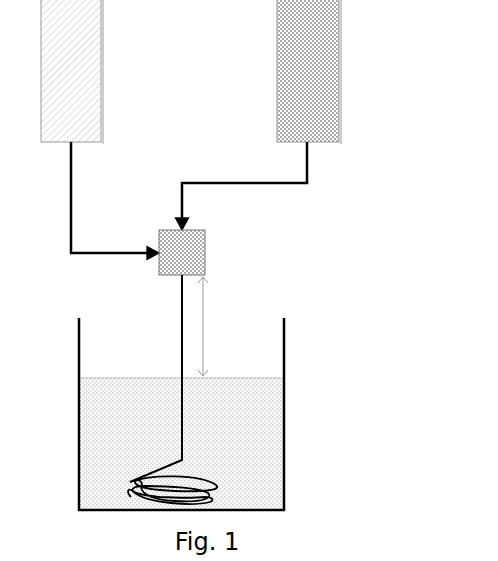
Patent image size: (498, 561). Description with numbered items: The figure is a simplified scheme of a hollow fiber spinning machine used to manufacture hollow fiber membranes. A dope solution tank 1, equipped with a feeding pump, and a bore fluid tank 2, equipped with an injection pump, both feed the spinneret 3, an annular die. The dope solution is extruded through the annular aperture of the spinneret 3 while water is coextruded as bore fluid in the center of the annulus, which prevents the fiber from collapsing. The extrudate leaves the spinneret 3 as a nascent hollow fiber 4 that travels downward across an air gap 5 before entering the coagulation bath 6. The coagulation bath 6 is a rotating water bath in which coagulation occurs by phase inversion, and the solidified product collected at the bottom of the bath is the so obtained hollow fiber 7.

The dope solution tank 1 is at (100, 130).
The bore fluid tank 2 is at (275, 115).
The spinneret 3 is at (199, 252).
The nascent hollow fiber 4 is at (156, 378).
The air gap 5 is at (215, 326).
The coagulation bath 6 is at (181, 414).
The hollow fiber 7 is at (181, 490).